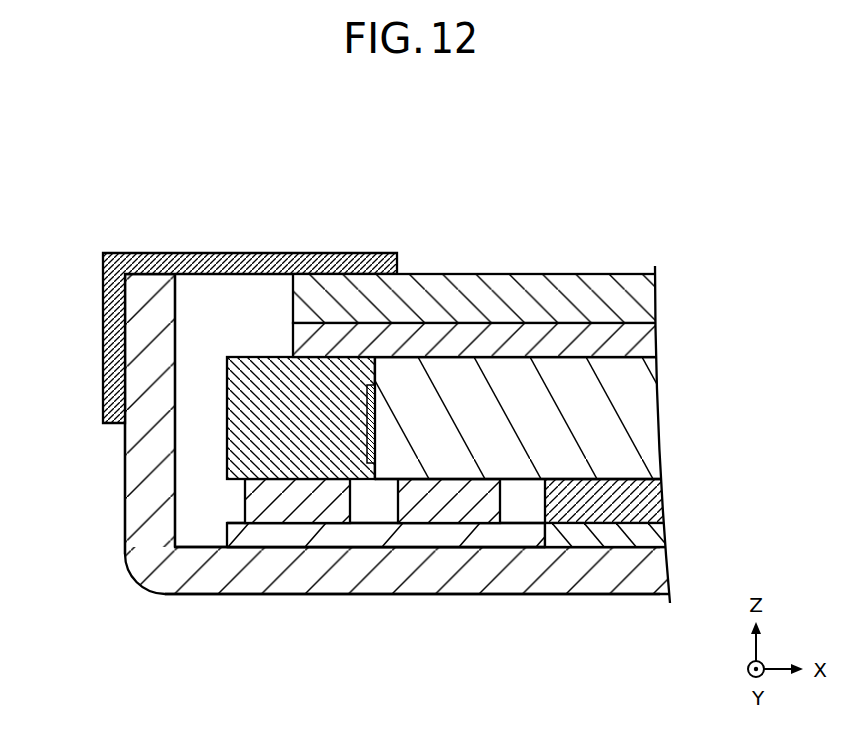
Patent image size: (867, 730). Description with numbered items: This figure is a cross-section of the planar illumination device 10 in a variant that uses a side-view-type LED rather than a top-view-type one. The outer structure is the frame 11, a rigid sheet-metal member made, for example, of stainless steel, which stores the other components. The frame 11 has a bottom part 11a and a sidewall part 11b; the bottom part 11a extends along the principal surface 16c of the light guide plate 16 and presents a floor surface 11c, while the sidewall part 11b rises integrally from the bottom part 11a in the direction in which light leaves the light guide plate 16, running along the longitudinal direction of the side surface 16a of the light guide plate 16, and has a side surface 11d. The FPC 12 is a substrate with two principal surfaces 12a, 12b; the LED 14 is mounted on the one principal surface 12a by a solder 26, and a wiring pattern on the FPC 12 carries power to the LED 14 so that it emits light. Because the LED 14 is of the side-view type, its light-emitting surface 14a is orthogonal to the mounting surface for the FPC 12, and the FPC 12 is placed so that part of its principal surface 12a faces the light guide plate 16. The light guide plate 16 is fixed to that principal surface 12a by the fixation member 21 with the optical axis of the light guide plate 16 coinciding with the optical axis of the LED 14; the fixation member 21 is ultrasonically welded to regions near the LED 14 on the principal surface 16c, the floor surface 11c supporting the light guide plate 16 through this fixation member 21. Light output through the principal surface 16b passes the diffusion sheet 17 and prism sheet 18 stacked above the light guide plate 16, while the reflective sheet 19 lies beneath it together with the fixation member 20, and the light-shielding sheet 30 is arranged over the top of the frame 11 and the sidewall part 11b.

The planar illumination device 10 is at (671, 175).
The frame 11 is at (641, 606).
The bottom part 11a is at (525, 575).
The sidewall part 11b is at (130, 462).
The floor surface 11c is at (517, 547).
The side surface 11d is at (178, 333).
The FPC 12 is at (348, 535).
The principal surface 12a is at (236, 522).
The principal surface 12b is at (248, 547).
The LED 14 is at (283, 385).
The light-emitting surface 14a is at (353, 388).
The light guide plate 16 is at (647, 425).
The side surface 16a is at (378, 358).
The principal surface 16b is at (557, 357).
The principal surface 16c is at (535, 483).
The diffusion sheet 17 is at (650, 340).
The prism sheet 18 is at (650, 293).
The reflective sheet 19 is at (665, 490).
The fixation member 20 is at (662, 528).
The fixation member 21 is at (430, 507).
The solder 26 is at (298, 502).
The light-shielding sheet 30 is at (105, 380).